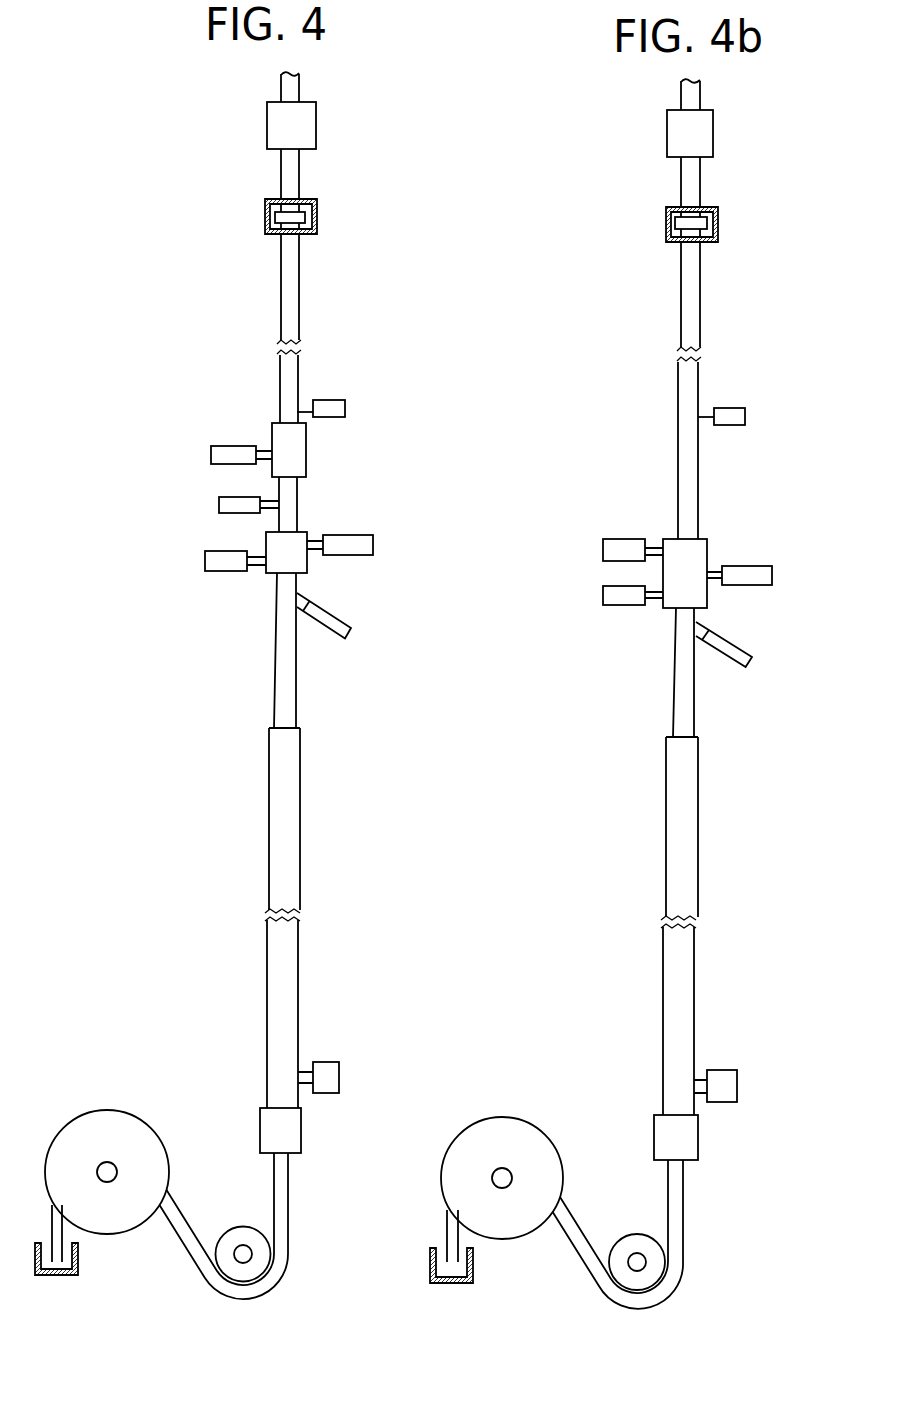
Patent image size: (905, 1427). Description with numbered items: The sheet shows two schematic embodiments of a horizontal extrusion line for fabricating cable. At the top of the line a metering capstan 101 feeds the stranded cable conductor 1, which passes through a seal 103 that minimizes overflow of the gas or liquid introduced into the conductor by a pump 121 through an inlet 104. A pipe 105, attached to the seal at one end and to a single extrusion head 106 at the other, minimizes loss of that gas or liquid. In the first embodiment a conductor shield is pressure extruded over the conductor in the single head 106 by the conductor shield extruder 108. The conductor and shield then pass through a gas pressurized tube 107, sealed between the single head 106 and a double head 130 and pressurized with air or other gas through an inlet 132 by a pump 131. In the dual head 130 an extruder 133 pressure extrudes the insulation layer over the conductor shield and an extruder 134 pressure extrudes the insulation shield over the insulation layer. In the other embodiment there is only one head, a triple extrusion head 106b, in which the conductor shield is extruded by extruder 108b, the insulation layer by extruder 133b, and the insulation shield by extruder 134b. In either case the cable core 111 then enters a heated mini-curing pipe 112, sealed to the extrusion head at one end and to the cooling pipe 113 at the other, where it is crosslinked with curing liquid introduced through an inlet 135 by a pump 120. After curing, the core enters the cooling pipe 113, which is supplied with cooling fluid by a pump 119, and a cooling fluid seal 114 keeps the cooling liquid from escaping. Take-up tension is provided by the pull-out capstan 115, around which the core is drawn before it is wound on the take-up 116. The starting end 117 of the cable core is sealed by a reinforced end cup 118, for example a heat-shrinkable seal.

In FIG. 4, the stranded cable conductor 1 is at (282, 175).
In FIG. 4b, the stranded cable conductor 1 is at (682, 186).
In FIG. 4, the metering capstan 101 is at (270, 123).
In FIG. 4b, the metering capstan 101 is at (667, 124).
In FIG. 4, the seal 103 is at (266, 217).
In FIG. 4b, the seal 103 is at (718, 224).
In FIG. 4, the inlet 104 is at (302, 413).
In FIG. 4b, the inlet 104 is at (704, 420).
In FIG. 4, the pipe 105 is at (283, 279).
In FIG. 4b, the pipe 105 is at (681, 282).
In FIG. 4, the single extrusion head 106 is at (300, 458).
In FIG. 4b, the triple extrusion head 106b is at (702, 599).
In FIG. 4, the gas pressurized tube 107 is at (298, 503).
In FIG. 4, the conductor shield extruder 108 is at (228, 448).
In FIG. 4b, the extruder 108b is at (620, 543).
In FIG. 4, the cable core 111 is at (289, 1198).
In FIG. 4b, the cable core 111 is at (683, 1205).
In FIG. 4, the mini-curing pipe 112 is at (278, 660).
In FIG. 4b, the mini-curing pipe 112 is at (688, 672).
In FIG. 4, the cooling pipe 113 is at (279, 798).
In FIG. 4b, the cooling pipe 113 is at (686, 808).
In FIG. 4, the cooling fluid seal 114 is at (260, 1119).
In FIG. 4b, the cooling fluid seal 114 is at (654, 1127).
In FIG. 4, the pull-out capstan 115 is at (243, 1227).
In FIG. 4b, the pull-out capstan 115 is at (640, 1234).
In FIG. 4, the take-up 116 is at (104, 1110).
In FIG. 4b, the take-up 116 is at (500, 1117).
In FIG. 4, the starting end 117 is at (53, 1220).
In FIG. 4b, the starting end 117 is at (448, 1225).
In FIG. 4, the reinforced end cup 118 is at (78, 1268).
In FIG. 4b, the reinforced end cup 118 is at (473, 1272).
In FIG. 4, the pump 119 is at (320, 1062).
In FIG. 4b, the pump 119 is at (718, 1070).
In FIG. 4, the pump 120 is at (353, 630).
In FIG. 4b, the pump 120 is at (748, 660).
In FIG. 4, the pump 121 is at (318, 400).
In FIG. 4b, the pump 121 is at (727, 408).
In FIG. 4, the double head 130 is at (295, 562).
In FIG. 4, the pump 131 is at (238, 502).
In FIG. 4, the inlet 132 is at (268, 514).
In FIG. 4, the extruder 133 is at (340, 540).
In FIG. 4b, the extruder 133b is at (745, 567).
In FIG. 4, the extruder 134 is at (218, 570).
In FIG. 4b, the extruder 134b is at (619, 604).
In FIG. 4, the inlet 135 is at (308, 614).
In FIG. 4b, the inlet 135 is at (698, 626).